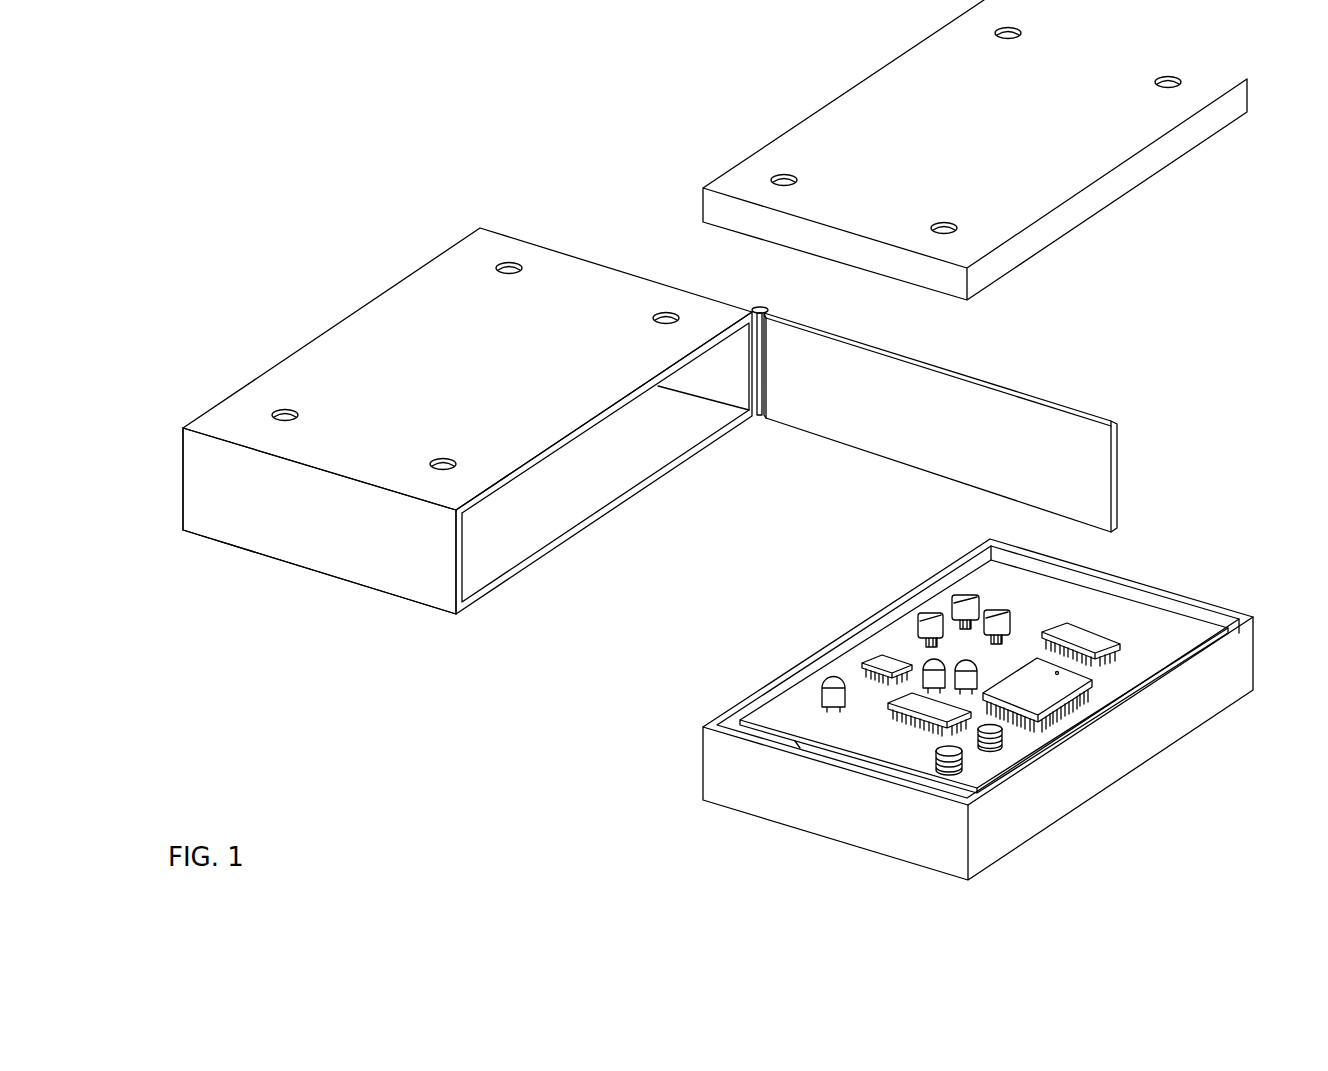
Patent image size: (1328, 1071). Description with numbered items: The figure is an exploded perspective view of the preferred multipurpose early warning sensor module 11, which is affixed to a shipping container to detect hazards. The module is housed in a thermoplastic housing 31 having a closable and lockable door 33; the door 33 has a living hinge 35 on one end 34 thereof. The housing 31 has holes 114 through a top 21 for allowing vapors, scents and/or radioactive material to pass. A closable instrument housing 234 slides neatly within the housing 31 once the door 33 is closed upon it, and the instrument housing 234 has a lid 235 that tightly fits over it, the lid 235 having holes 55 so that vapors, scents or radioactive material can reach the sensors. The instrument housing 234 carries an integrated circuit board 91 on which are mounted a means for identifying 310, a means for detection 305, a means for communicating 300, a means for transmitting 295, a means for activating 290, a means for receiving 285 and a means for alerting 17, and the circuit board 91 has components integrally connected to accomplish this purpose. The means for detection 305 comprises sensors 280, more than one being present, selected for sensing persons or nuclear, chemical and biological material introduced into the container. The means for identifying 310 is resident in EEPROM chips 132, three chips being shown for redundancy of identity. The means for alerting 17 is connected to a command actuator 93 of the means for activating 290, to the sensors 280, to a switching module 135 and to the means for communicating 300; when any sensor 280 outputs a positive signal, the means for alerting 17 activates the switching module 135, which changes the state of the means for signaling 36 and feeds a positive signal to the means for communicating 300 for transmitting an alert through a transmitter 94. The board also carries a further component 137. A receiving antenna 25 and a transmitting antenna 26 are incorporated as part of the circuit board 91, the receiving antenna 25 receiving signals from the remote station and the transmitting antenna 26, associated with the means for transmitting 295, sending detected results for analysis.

The multipurpose early warning sensor module 11 is at (418, 687).
The means for alerting 17 is at (913, 538).
The top 21 is at (467, 422).
The receiving antenna 25 is at (935, 763).
The transmitting antenna 26 is at (993, 747).
The housing 31 is at (314, 544).
The door 33 is at (1030, 428).
The end 34 is at (770, 309).
The living hinge 35 is at (750, 309).
The means for signaling 36 is at (603, 822).
The holes 55 is at (787, 172).
The circuit board 91 is at (1173, 630).
The command actuator 93 is at (1082, 638).
The transmitter 94 is at (907, 717).
The holes 114 is at (280, 409).
The EEPROM chips 132 is at (1013, 613).
The switching module 135 is at (880, 665).
The component 137 is at (1068, 683).
The instrument housing 234 is at (948, 680).
The lid 235 is at (975, 150).
The sensors 280 is at (960, 677).
The means for receiving 285 is at (1125, 802).
The means for activating 290 is at (1225, 528).
The means for transmitting 295 is at (672, 830).
The means for communicating 300 is at (613, 790).
The means for detection 305 is at (722, 638).
The means for identifying 310 is at (1163, 505).